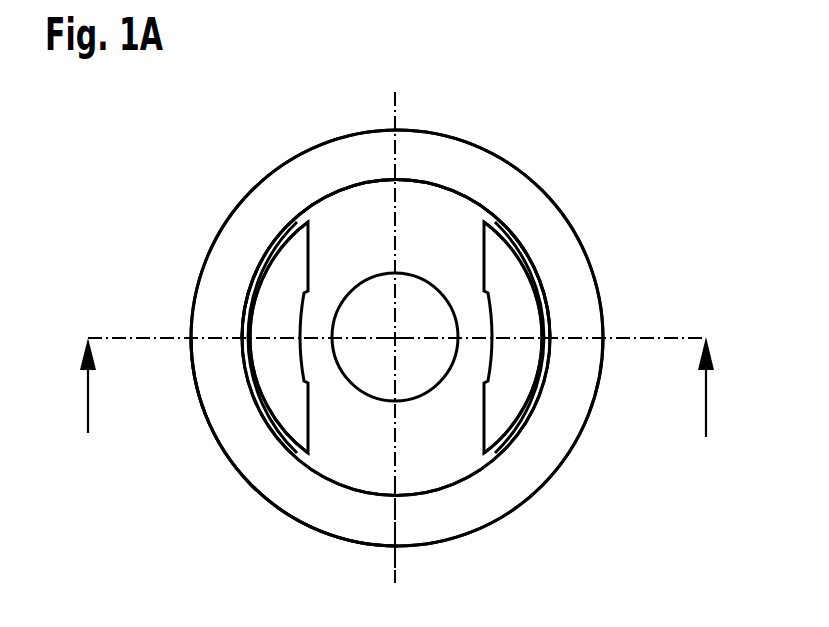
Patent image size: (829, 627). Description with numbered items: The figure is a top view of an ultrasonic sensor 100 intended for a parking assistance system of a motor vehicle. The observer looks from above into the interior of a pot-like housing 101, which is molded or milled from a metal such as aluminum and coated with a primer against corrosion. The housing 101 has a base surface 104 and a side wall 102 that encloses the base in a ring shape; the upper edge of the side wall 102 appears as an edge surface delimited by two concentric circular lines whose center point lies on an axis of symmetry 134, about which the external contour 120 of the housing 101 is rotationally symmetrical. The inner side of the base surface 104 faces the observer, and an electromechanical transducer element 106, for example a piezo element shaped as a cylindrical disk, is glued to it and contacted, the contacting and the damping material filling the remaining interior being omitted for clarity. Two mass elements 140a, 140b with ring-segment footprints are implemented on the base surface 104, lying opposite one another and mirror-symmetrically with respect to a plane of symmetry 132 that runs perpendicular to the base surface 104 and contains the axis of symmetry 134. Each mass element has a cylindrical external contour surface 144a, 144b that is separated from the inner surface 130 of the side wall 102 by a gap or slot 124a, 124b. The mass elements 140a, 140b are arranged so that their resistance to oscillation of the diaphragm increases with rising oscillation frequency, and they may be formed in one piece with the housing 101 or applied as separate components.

The ultrasonic sensor 100 is at (397, 334).
The housing 101 is at (591, 268).
The side wall 102 is at (518, 472).
The base surface 104 is at (454, 204).
The electromechanical transducer element 106 is at (375, 373).
The external contour 120 is at (252, 488).
The gap 124a is at (515, 248).
The gap 124b is at (263, 419).
The inner surface 130 is at (326, 202).
The plane of symmetry 132 is at (395, 573).
The axis of symmetry 134 is at (393, 333).
The mass element 140a is at (507, 385).
The mass element 140b is at (273, 310).
The cylindrical external contour surface 144a is at (550, 303).
The cylindrical external contour surface 144b is at (240, 313).